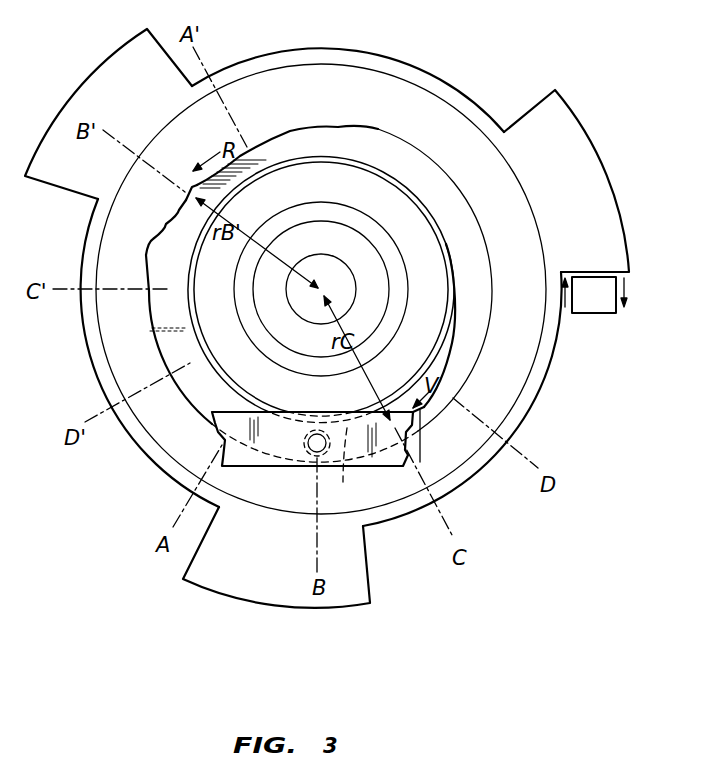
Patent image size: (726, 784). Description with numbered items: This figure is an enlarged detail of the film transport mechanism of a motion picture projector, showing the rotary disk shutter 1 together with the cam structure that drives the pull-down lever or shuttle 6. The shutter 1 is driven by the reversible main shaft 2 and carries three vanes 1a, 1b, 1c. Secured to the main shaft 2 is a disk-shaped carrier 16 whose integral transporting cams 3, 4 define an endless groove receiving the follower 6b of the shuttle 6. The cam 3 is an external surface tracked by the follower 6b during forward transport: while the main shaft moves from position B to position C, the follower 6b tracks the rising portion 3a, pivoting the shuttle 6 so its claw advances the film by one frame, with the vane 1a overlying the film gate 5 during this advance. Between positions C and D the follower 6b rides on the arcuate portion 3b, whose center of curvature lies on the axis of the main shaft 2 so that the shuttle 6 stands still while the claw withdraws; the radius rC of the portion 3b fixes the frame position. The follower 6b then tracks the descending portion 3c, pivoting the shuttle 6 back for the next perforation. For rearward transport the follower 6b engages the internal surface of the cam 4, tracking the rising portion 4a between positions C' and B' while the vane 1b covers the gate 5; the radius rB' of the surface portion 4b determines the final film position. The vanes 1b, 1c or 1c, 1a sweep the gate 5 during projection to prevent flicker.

The rotary disk shutter 1 is at (415, 69).
The vane 1a is at (586, 153).
The vane 1b is at (242, 580).
The vane 1c is at (125, 62).
The main shaft 2 is at (335, 276).
The transporting cam 3 is at (353, 334).
The rising portion 3a is at (344, 480).
The arcuate portion 3b is at (428, 409).
The descending portion 3c is at (451, 350).
The transporting cam 4 is at (319, 294).
The rising portion 4a is at (166, 230).
The surface portion 4b is at (193, 186).
The film gate 5 is at (601, 302).
The pull-down lever or shuttle 6 is at (264, 444).
The follower 6b is at (314, 451).
The disk-shaped carrier 16 is at (313, 64).